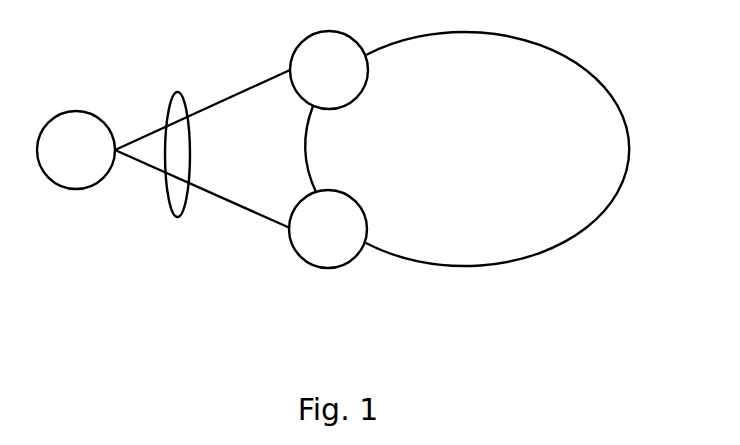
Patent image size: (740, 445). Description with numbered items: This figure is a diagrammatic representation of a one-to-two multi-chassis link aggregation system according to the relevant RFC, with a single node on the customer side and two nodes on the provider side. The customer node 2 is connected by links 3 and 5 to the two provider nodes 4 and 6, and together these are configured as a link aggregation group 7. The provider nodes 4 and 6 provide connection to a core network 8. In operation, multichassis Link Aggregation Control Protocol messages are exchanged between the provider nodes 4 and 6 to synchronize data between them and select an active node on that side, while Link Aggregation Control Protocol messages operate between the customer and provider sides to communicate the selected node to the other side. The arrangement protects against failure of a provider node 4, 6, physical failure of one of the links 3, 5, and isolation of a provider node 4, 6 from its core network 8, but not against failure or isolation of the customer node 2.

The customer node 2 is at (76, 150).
The link 3 is at (223, 99).
The provider node 4 is at (329, 70).
The link 5 is at (230, 201).
The provider node 6 is at (328, 229).
The link aggregation group 7 is at (174, 217).
The core network 8 is at (467, 149).